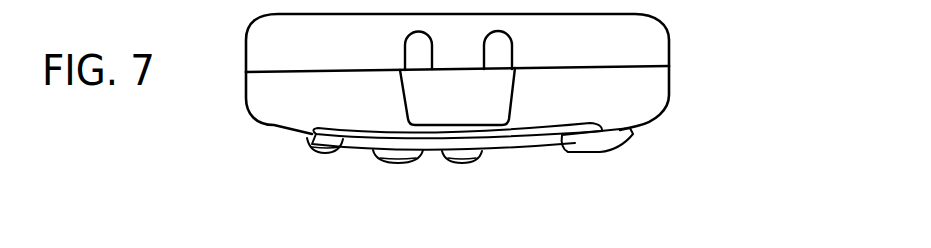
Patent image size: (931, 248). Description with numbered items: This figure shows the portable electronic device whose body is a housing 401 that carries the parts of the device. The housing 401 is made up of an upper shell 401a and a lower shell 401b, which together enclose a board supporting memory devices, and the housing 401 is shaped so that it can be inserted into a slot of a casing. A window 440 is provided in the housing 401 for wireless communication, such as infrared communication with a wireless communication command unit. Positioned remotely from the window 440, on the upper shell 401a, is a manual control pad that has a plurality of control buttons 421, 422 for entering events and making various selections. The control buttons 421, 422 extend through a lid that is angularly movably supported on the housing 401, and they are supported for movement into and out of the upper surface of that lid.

The housing 401 is at (535, 74).
The upper shell 401a is at (620, 90).
The lower shell 401b is at (620, 43).
The control button 421 is at (323, 153).
The control button 422 is at (600, 153).
The window 440 is at (467, 110).